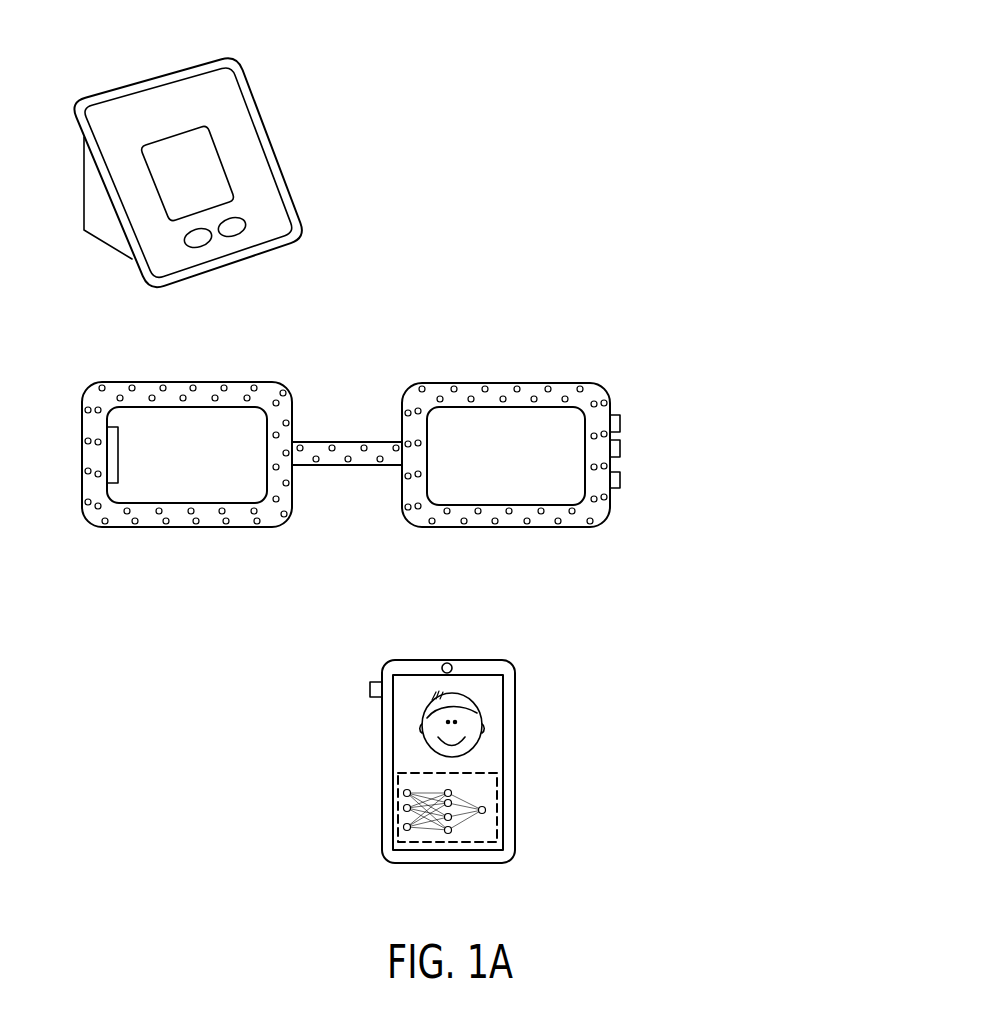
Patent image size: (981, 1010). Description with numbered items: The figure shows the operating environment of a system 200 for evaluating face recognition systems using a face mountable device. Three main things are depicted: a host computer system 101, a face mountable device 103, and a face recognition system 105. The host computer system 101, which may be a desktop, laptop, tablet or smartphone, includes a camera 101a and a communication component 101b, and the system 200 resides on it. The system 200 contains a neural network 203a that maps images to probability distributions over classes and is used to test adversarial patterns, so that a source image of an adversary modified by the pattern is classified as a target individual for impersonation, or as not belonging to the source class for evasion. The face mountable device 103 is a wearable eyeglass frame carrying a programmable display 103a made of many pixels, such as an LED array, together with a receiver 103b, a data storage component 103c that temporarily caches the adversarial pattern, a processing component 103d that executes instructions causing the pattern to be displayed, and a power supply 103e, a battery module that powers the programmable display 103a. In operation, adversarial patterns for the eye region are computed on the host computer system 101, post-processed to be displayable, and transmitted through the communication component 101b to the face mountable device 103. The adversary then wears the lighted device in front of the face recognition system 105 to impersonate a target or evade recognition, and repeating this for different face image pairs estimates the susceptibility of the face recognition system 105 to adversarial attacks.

The face recognition system 105 is at (178, 73).
The face mountable device 103 is at (130, 382).
The power supply 103e is at (115, 457).
The programmable display 103a is at (508, 368).
The processing component 103d is at (618, 422).
The data storage component 103c is at (620, 448).
The receiver 103b is at (620, 482).
The host computer system 101 is at (494, 667).
The camera 101a is at (449, 662).
The communication component 101b is at (370, 688).
The system 200 is at (398, 788).
The neural network 203a is at (465, 800).